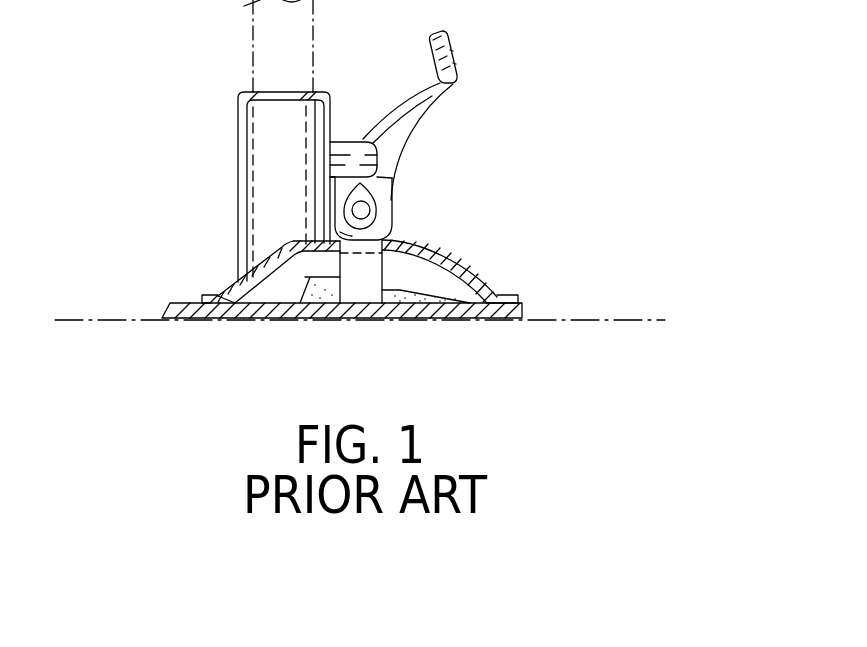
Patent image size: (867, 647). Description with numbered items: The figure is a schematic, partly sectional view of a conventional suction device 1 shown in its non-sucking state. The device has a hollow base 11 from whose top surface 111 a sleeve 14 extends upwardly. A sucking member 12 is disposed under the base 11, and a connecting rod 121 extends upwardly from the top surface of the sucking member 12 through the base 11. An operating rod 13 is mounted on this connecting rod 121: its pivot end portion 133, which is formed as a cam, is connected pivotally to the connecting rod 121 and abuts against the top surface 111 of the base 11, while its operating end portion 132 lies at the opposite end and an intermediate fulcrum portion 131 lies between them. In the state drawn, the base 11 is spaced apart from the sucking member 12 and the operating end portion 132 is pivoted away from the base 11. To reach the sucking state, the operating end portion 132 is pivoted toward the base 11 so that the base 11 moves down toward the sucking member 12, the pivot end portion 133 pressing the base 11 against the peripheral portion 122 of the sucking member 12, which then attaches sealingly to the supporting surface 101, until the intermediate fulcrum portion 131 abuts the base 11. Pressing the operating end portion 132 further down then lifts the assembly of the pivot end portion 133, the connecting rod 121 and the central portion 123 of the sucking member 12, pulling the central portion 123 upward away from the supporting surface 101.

The suction device 1 is at (570, 140).
The hollow base 11 is at (482, 249).
The top surface 111 is at (418, 242).
The sucking member 12 is at (465, 371).
The connecting rod 121 is at (350, 280).
The peripheral portion 122 is at (477, 305).
The central portion 123 is at (378, 303).
The operating rod 13 is at (385, 92).
The intermediate fulcrum portion 131 is at (428, 101).
The operating end portion 132 is at (439, 34).
The pivot end portion 133 is at (403, 196).
The sleeve 14 is at (257, 115).
The supporting surface 101 is at (622, 320).